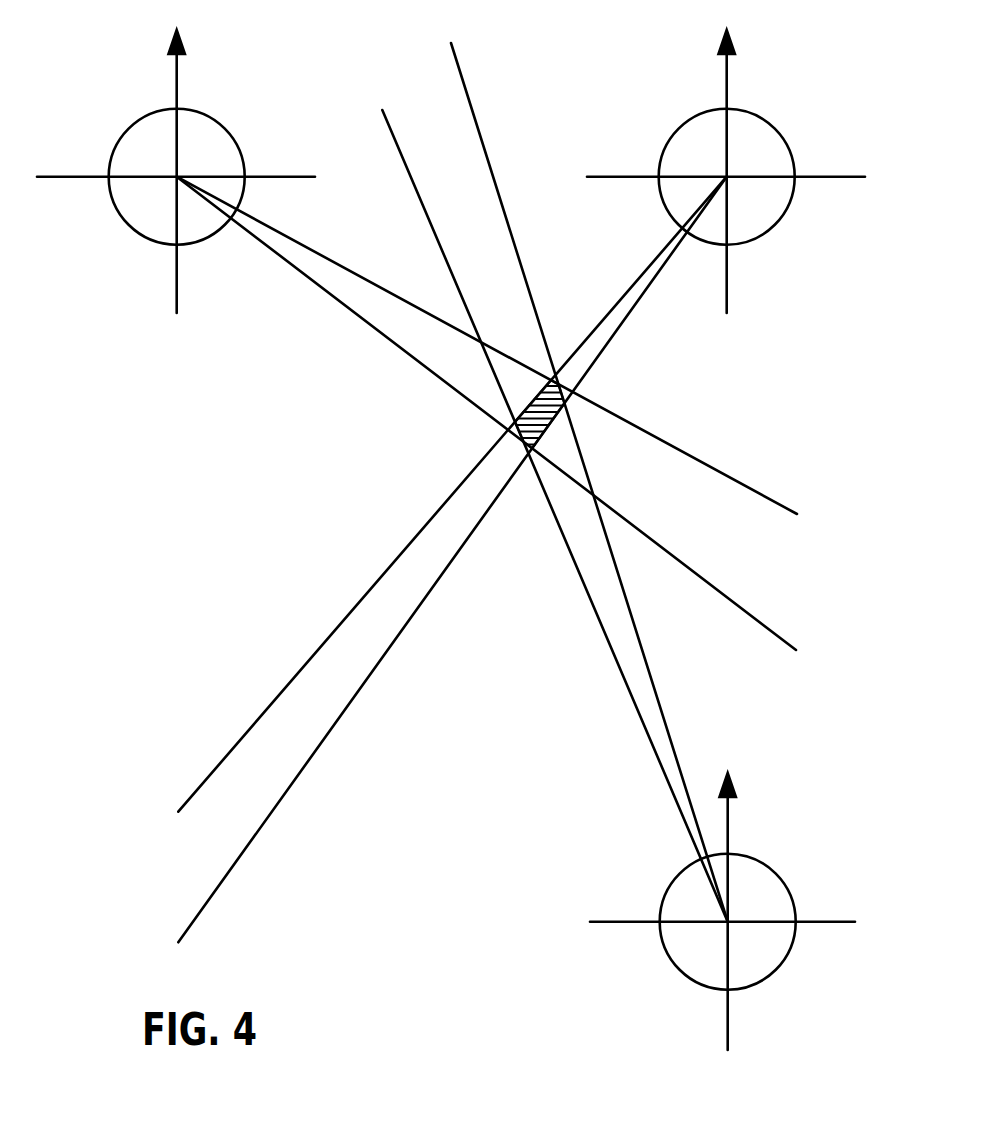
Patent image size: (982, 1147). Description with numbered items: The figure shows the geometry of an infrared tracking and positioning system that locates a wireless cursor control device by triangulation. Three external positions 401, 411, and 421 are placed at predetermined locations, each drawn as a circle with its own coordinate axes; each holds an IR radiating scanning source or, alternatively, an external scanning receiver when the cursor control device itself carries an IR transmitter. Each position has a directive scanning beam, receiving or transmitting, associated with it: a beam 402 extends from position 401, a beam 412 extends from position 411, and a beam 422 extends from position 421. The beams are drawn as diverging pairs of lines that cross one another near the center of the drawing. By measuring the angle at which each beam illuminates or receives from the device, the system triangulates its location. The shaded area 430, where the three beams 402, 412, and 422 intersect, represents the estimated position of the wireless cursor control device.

The external position 401 is at (125, 225).
The directive scanning beam 402 is at (350, 310).
The external position 411 is at (768, 122).
The directive scanning beam 412 is at (615, 338).
The external position 421 is at (777, 872).
The directive scanning beam 422 is at (655, 686).
The shaded area 430 is at (527, 404).